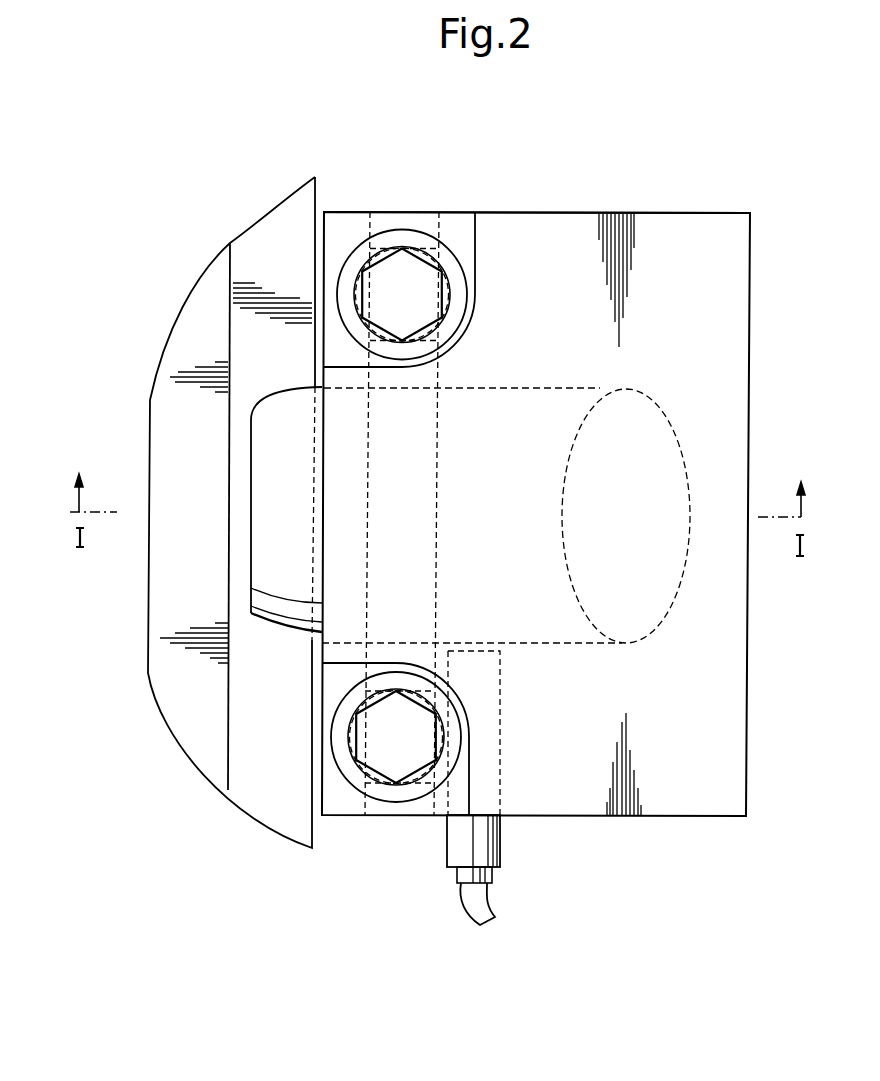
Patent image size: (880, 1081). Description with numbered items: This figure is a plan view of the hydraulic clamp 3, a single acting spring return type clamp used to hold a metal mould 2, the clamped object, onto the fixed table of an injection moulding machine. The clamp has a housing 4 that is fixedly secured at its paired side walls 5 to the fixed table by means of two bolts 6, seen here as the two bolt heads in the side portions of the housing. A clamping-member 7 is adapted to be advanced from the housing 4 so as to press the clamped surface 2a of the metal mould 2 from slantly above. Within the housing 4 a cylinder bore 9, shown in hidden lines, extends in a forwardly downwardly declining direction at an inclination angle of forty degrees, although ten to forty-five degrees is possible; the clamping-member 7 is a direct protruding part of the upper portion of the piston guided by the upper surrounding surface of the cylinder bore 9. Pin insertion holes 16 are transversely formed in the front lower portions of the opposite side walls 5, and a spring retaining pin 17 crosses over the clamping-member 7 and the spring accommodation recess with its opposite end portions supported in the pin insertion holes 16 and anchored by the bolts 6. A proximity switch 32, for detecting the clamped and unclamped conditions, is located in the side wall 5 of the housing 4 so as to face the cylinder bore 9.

The metal mould 2 is at (185, 323).
The clamped surface 2a is at (240, 428).
The hydraulic clamp 3 is at (665, 195).
The housing 4 is at (583, 212).
The side walls 5 is at (512, 243).
The bolts 6 is at (415, 238).
The clamping-member 7 is at (258, 570).
The cylinder bore 9 is at (530, 390).
The pin insertion holes 16 is at (383, 212).
The spring retaining pin 17 is at (443, 535).
The proximity switch 32 is at (500, 845).